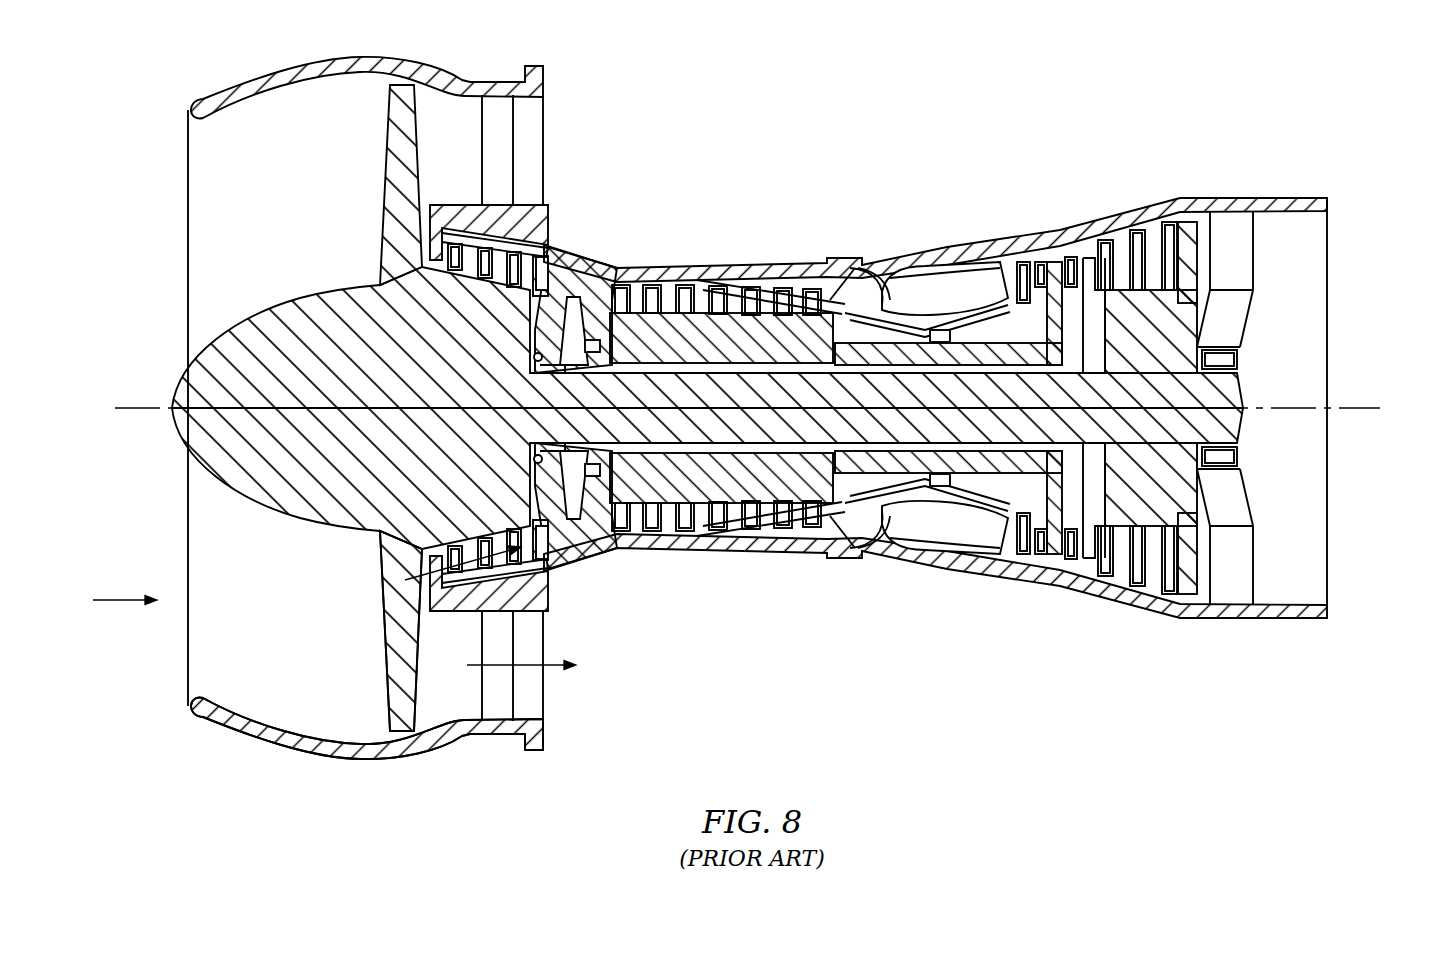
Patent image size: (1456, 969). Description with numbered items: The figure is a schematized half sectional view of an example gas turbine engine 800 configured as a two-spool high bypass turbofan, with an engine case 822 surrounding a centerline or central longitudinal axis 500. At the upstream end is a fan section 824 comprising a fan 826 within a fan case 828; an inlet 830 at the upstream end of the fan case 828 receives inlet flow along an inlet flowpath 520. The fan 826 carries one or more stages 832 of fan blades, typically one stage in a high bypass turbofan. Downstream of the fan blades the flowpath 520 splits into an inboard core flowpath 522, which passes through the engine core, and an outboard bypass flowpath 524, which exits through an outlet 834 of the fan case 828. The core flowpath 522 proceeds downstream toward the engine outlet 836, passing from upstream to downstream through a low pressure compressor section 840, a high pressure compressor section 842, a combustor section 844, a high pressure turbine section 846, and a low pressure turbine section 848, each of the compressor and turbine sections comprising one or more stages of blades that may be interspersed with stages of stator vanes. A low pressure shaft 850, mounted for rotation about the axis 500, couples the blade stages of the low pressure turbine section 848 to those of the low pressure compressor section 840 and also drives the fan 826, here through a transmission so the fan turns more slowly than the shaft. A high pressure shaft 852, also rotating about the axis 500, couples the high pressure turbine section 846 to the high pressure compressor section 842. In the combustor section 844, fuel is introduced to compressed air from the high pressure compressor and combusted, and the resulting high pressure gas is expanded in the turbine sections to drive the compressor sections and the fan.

The gas turbine engine 800 is at (0, 0).
The central longitudinal axis 500 is at (133, 392).
The inlet flowpath 520 is at (94, 600).
The core flowpath 522 is at (524, 573).
The bypass flowpath 524 is at (536, 667).
The engine case 822 is at (0, 0).
The fan section 824 is at (0, 0).
The fan 826 is at (0, 0).
The fan case 828 is at (417, 742).
The inlet 830 is at (128, 416).
The stages of fan blades 832 is at (360, 631).
The outlet of the fan case 834 is at (572, 408).
The engine outlet 836 is at (1322, 408).
The low pressure compressor section 840 is at (0, 0).
The high pressure compressor section 842 is at (0, 0).
The combustor section 844 is at (920, 377).
The high pressure turbine section 846 is at (0, 0).
The low pressure turbine section 848 is at (0, 0).
The low pressure shaft 850 is at (937, 430).
The high pressure shaft 852 is at (989, 462).